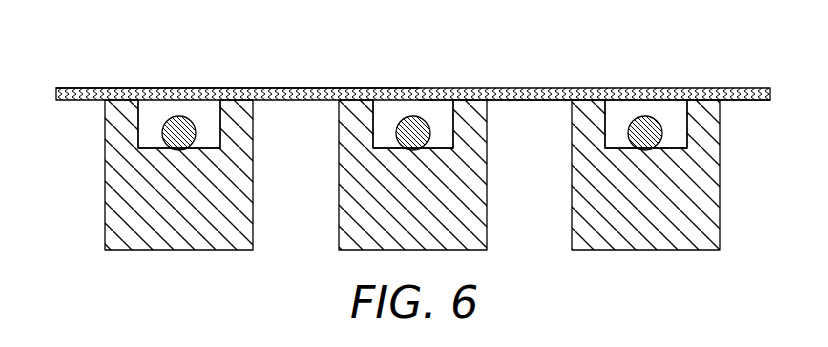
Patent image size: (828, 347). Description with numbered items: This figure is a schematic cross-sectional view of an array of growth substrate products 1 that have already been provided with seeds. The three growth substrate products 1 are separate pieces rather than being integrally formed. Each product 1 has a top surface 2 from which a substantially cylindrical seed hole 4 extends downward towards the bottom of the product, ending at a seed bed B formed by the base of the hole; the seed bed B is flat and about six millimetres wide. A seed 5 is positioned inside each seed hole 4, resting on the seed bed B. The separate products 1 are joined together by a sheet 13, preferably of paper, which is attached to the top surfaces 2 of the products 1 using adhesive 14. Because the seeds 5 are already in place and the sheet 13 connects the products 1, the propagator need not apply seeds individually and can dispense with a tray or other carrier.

The growth substrate product 1 is at (709, 185).
The top surface 2 is at (700, 96).
The seed hole 4 is at (620, 117).
The seed 5 is at (408, 117).
The sheet 13 is at (73, 88).
The adhesive 14 is at (467, 88).
The seed bed B is at (155, 149).